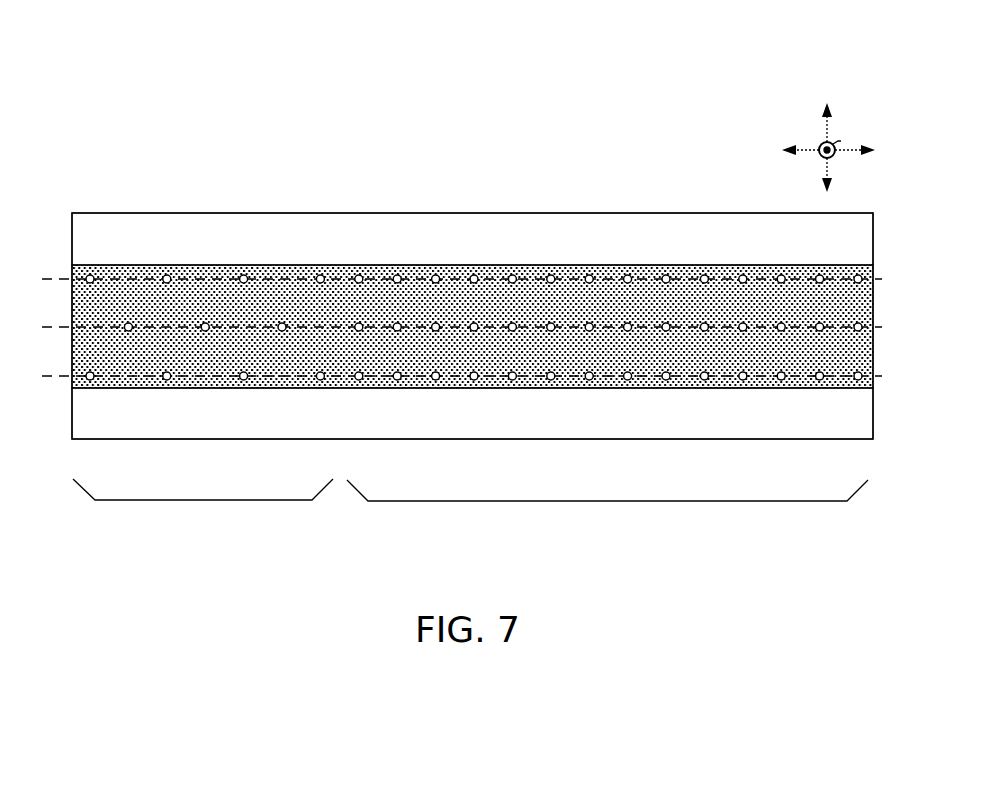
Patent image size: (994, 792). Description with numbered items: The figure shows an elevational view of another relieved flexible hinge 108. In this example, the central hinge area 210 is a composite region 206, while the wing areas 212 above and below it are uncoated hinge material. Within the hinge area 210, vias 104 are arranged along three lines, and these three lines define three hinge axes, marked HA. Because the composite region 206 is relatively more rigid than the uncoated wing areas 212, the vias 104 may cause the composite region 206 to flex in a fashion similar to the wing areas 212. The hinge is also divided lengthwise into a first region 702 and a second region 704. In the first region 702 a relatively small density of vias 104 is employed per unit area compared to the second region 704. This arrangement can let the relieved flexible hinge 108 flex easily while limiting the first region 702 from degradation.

The vias 104 is at (356, 271).
The composite region 206 is at (416, 260).
The relieved flexible hinge 108 is at (604, 89).
The hinge area 210 is at (242, 316).
The wing areas 212 is at (238, 248).
The first region 702 is at (188, 500).
The second region 704 is at (582, 501).